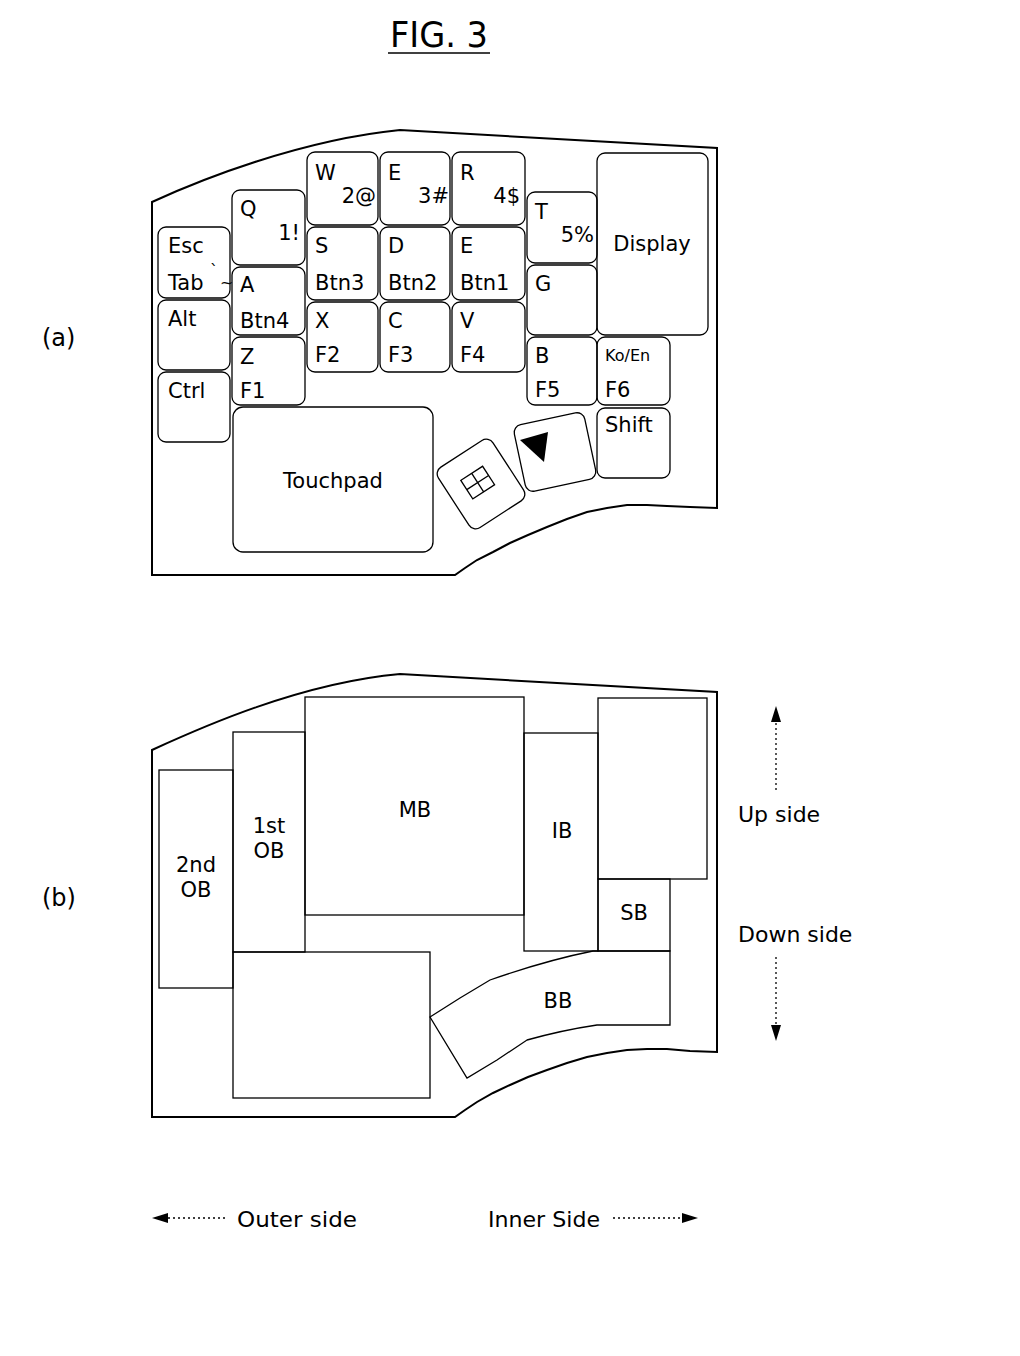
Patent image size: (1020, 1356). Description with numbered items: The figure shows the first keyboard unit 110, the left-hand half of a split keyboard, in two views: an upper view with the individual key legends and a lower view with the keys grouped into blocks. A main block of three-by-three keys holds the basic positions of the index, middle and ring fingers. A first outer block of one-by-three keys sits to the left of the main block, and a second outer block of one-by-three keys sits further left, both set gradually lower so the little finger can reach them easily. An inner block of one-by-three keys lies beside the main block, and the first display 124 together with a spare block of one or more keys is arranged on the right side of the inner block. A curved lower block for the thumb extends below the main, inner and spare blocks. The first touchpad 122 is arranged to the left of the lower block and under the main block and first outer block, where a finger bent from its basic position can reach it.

The first keyboard unit 110 is at (718, 218).
The first touchpad 122 is at (360, 1099).
The first display 124 is at (627, 690).